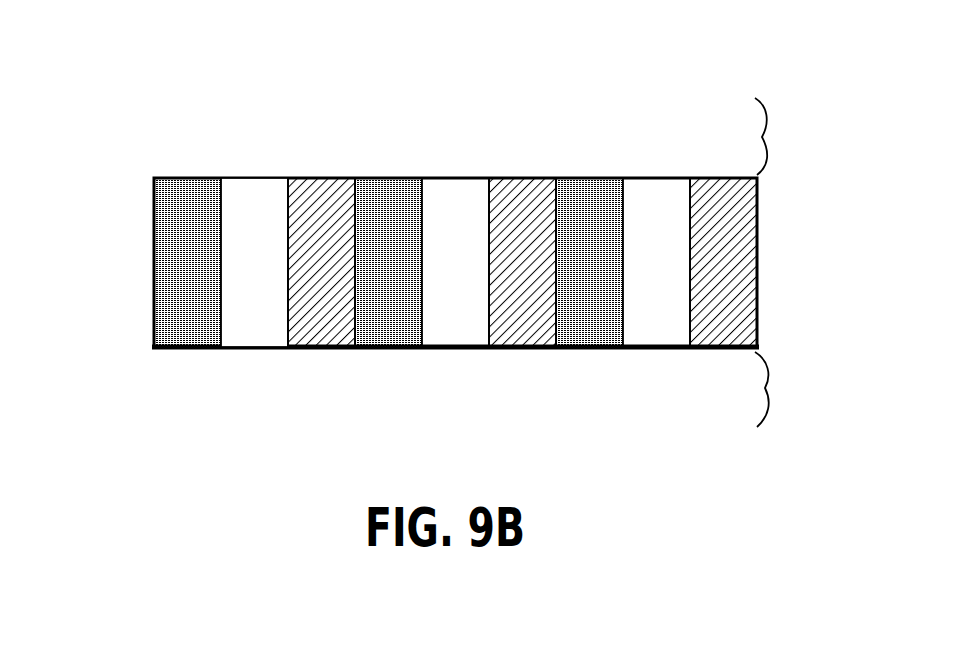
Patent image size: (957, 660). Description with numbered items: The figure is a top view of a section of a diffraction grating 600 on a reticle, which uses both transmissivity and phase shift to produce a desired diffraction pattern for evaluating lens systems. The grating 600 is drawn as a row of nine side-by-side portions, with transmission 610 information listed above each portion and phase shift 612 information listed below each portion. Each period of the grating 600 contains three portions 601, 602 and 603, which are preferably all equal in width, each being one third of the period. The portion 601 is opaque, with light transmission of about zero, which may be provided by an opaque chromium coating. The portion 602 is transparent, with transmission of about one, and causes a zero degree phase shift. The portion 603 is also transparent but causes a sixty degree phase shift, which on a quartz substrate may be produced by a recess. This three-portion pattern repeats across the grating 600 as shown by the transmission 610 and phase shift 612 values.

The diffraction grating 600 is at (178, 437).
The opaque portion 601 is at (153, 260).
The transparent portion with zero degree phase shift 602 is at (271, 190).
The transparent portion with sixty degree phase shift 603 is at (307, 348).
The transmission 610 is at (762, 137).
The phase shift 612 is at (765, 388).